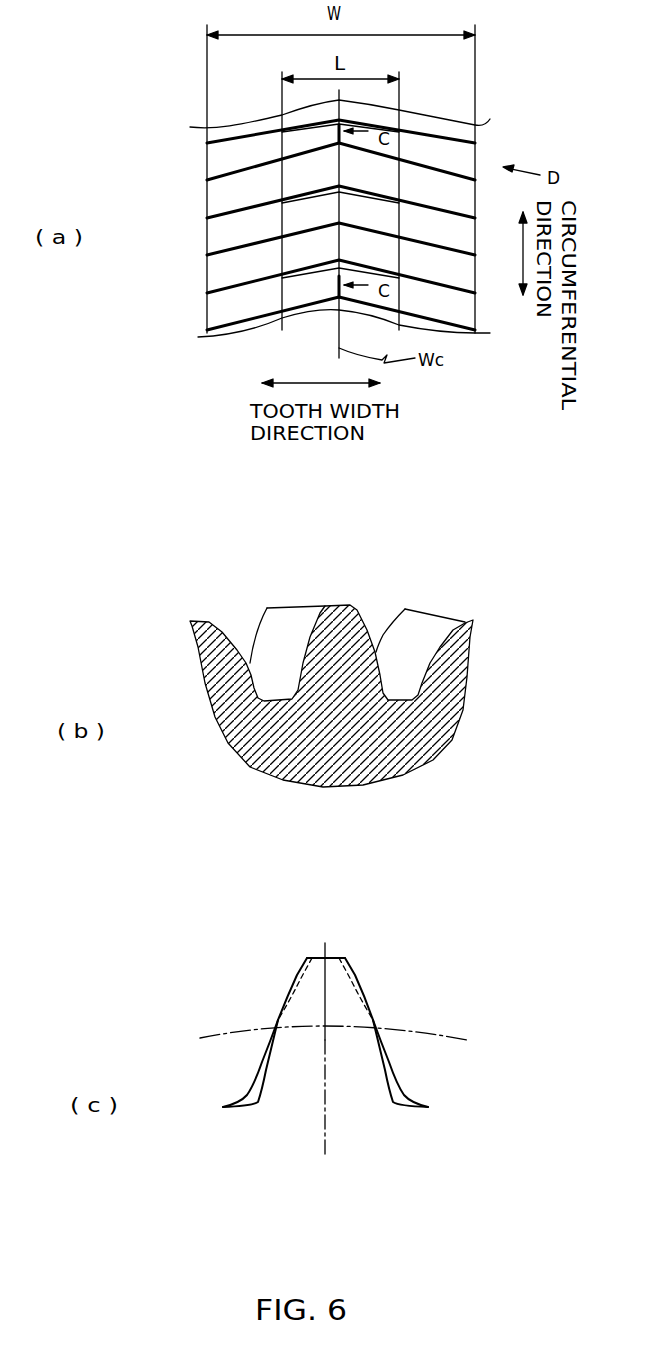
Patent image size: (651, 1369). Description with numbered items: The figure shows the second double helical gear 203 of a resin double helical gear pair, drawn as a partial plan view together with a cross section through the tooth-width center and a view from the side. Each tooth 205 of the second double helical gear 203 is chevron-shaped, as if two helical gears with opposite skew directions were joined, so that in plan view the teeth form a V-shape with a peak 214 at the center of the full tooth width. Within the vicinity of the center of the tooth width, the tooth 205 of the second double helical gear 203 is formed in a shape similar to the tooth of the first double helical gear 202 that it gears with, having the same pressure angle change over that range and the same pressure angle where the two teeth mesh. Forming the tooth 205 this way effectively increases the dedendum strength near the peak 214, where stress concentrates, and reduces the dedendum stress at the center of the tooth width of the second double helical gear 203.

The first double helical gear 202 is at (246, 584).
The second double helical gear 203 is at (204, 164).
The tooth 205 is at (248, 146).
The peak 214 is at (319, 177).